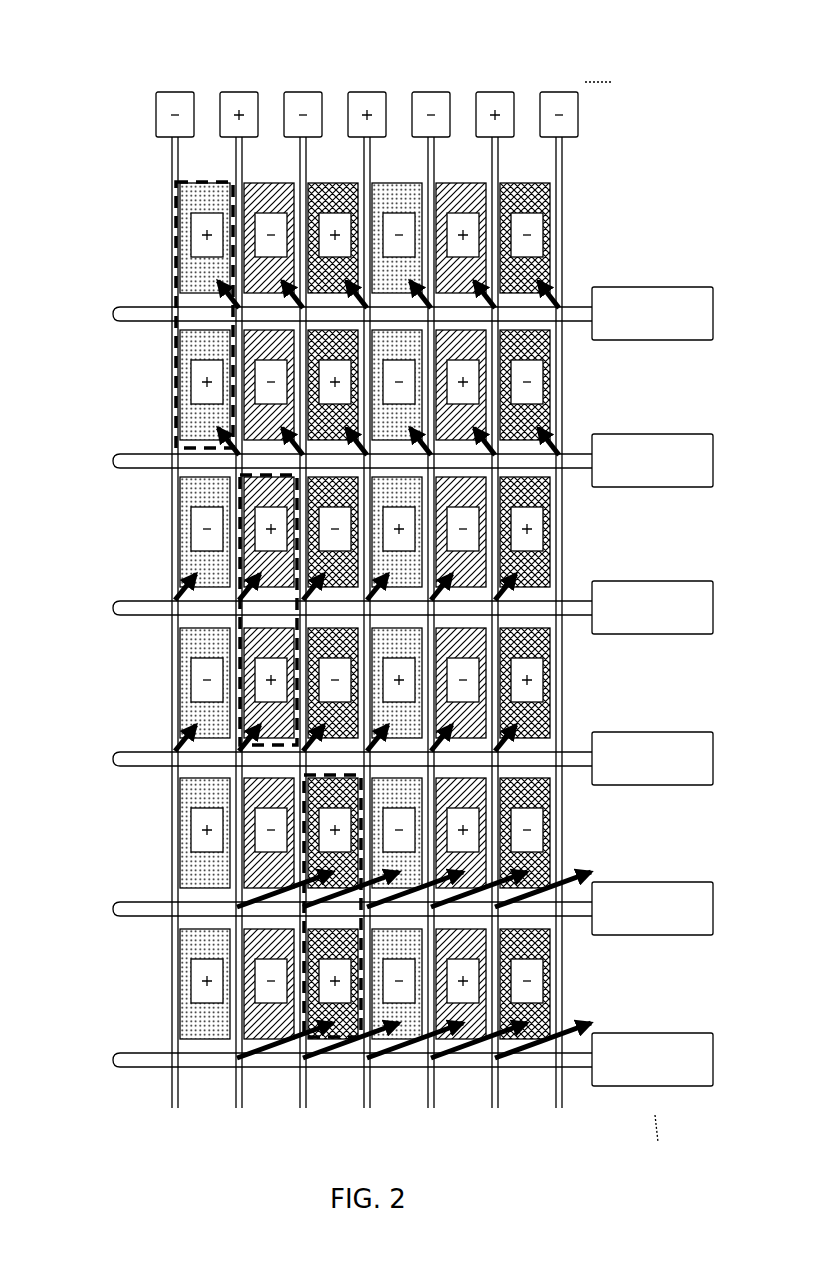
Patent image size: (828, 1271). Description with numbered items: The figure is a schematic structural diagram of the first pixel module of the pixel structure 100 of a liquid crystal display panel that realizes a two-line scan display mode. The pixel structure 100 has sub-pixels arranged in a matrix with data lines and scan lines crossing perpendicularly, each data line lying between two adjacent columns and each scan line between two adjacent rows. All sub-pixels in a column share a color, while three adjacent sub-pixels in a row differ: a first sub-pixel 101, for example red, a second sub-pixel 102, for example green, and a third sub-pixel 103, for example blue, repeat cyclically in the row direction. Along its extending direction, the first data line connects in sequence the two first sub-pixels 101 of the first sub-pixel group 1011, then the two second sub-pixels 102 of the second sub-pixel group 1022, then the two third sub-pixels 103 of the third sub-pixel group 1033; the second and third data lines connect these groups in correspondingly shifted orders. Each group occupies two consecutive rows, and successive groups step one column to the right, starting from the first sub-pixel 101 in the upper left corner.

The pixel structure 100 is at (122, 35).
The first sub-pixel group 1011 is at (186, 181).
The first sub-pixel 101 is at (186, 188).
The second sub-pixel 102 is at (192, 212).
The third sub-pixel 103 is at (250, 268).
The second sub-pixel group 1022 is at (268, 474).
The third sub-pixel group 1033 is at (303, 827).